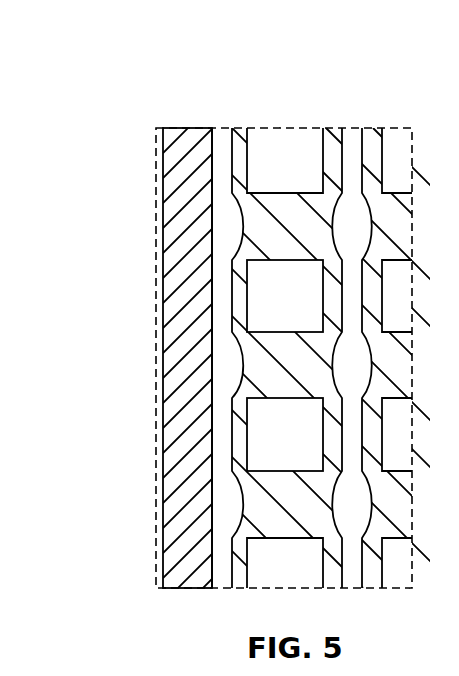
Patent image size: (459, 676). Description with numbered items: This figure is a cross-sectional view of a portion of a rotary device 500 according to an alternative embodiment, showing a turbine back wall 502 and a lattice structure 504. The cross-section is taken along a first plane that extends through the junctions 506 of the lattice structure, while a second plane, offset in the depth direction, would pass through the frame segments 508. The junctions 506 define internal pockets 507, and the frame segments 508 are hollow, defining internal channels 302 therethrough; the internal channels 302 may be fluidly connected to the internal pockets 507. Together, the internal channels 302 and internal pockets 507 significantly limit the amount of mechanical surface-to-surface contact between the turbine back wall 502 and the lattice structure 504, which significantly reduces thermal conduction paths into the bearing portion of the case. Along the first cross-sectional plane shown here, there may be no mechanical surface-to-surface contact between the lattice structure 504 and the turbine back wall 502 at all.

The rotary device 500 is at (160, 68).
The turbine back wall 502 is at (187, 200).
The lattice structure 504 is at (327, 153).
The junctions 506 is at (248, 218).
The internal pockets 507 is at (236, 210).
The frame segments 508 is at (244, 285).
The internal channels 302 is at (210, 304).